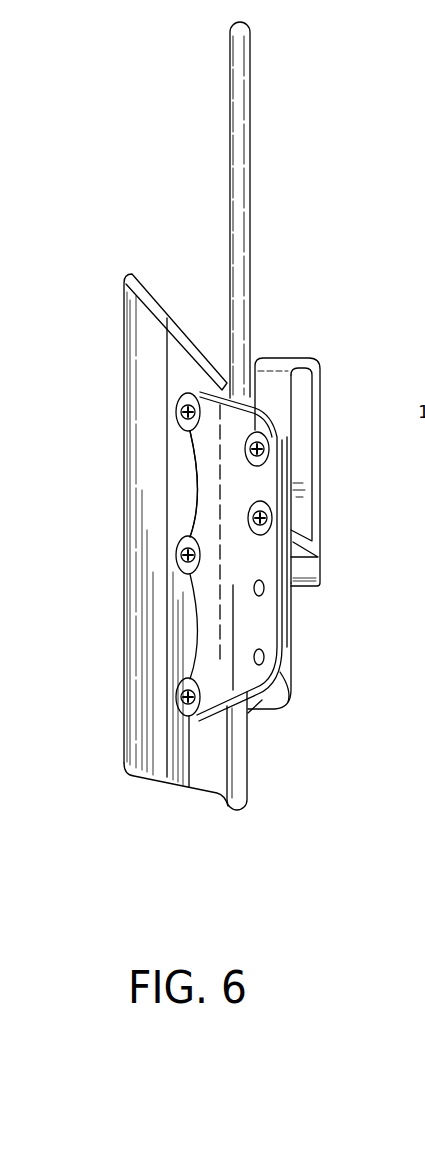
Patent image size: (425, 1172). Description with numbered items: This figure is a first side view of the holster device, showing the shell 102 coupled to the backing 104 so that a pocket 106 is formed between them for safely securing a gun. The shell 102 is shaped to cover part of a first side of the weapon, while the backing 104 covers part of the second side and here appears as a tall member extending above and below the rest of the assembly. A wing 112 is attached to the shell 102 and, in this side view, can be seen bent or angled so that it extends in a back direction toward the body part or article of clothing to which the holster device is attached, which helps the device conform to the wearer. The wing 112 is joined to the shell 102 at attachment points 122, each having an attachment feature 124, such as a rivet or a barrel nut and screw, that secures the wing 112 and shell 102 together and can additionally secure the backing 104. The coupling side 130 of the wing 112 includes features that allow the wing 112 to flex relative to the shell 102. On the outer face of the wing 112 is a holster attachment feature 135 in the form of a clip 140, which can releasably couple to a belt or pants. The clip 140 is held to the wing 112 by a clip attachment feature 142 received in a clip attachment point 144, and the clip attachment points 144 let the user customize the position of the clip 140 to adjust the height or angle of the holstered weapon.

The shell 102 is at (142, 343).
The backing 104 is at (238, 122).
The pocket 106 is at (183, 290).
The wing 112 is at (258, 630).
The attachment point 122 is at (173, 563).
The attachment feature 124 is at (180, 412).
The coupling side 130 is at (200, 490).
The holster attachment feature 135 is at (335, 383).
The clip 140 is at (270, 372).
The clip attachment feature 142 is at (262, 447).
The clip attachment point 144 is at (267, 667).